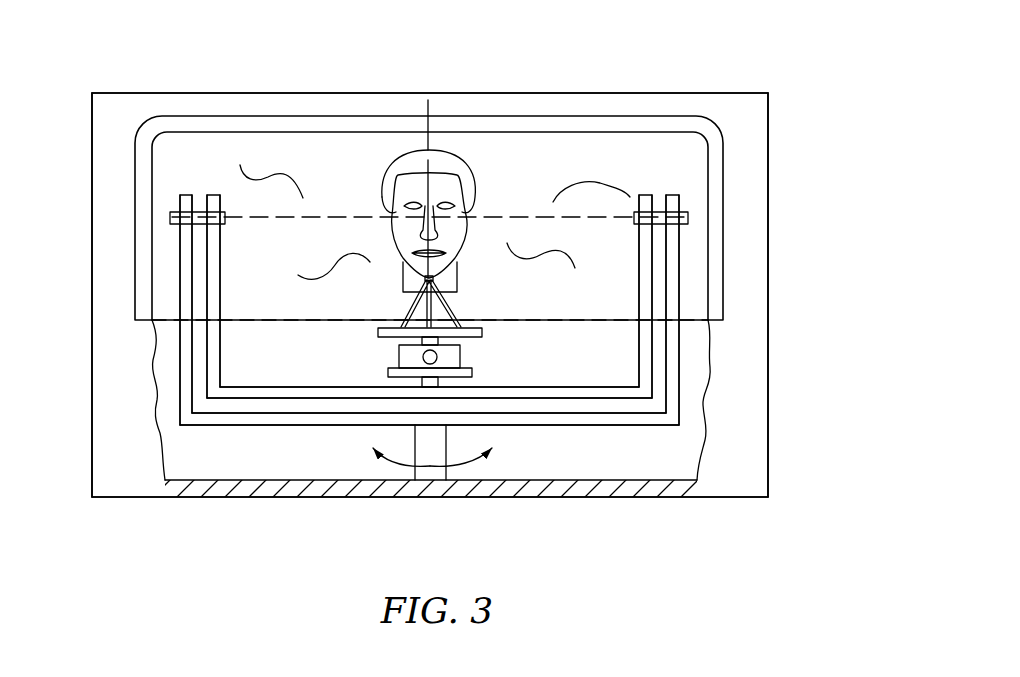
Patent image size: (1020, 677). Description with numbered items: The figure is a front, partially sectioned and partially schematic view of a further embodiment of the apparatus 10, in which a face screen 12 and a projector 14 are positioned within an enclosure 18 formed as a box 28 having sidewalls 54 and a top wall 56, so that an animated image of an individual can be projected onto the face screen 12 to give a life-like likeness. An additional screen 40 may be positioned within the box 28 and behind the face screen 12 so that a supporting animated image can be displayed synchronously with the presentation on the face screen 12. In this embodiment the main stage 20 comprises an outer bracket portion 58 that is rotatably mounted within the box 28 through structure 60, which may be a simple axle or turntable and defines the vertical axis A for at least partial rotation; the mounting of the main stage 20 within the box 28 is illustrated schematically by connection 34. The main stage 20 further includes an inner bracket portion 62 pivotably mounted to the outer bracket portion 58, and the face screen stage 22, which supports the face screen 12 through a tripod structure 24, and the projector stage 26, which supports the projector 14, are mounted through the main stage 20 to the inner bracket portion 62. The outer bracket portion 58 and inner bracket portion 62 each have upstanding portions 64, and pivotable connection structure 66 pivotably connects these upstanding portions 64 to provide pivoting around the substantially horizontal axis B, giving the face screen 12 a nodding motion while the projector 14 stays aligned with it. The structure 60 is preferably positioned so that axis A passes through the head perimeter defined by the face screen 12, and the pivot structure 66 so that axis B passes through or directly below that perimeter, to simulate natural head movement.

The apparatus 10 is at (825, 80).
The face screen 12 is at (490, 195).
The projector 14 is at (473, 350).
The enclosure 18 is at (827, 204).
The main stage 20 is at (235, 432).
The face screen stage 22 is at (385, 330).
The tripod structure 24 is at (445, 315).
The projector stage 26 is at (470, 372).
The box 28 is at (760, 432).
The connection 34 is at (437, 472).
The additional screen 40 is at (617, 152).
The sidewalls 54 is at (92, 292).
The top wall 56 is at (455, 93).
The outer bracket portion 58 is at (185, 387).
The structure 60 is at (383, 468).
The inner bracket portion 62 is at (220, 272).
The upstanding portions 64 is at (693, 230).
The pivotable connection structure 66 is at (658, 207).
The vertical axis A is at (427, 107).
The horizontal axis B is at (547, 217).